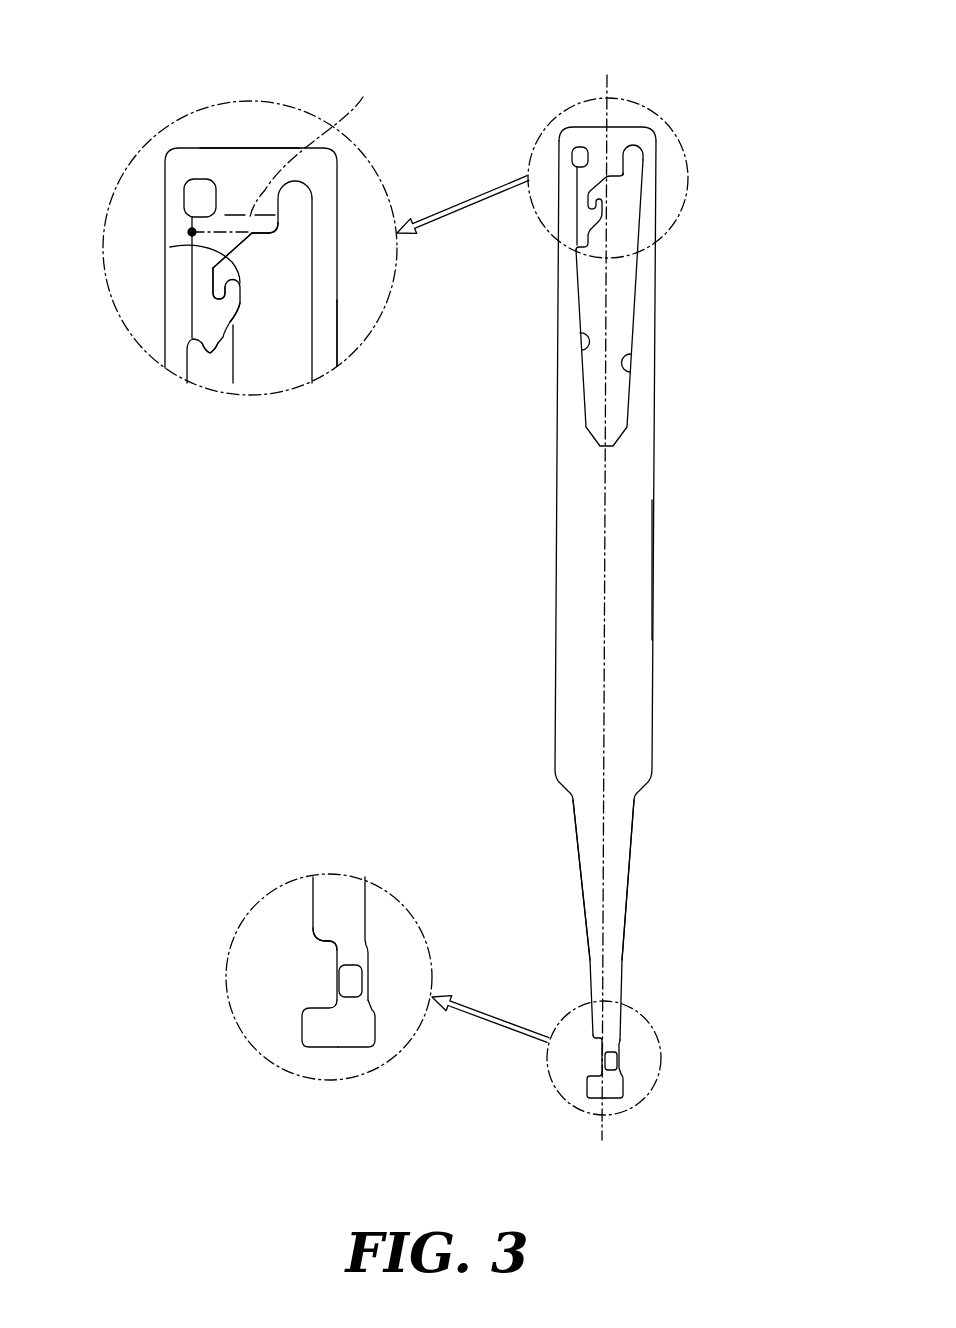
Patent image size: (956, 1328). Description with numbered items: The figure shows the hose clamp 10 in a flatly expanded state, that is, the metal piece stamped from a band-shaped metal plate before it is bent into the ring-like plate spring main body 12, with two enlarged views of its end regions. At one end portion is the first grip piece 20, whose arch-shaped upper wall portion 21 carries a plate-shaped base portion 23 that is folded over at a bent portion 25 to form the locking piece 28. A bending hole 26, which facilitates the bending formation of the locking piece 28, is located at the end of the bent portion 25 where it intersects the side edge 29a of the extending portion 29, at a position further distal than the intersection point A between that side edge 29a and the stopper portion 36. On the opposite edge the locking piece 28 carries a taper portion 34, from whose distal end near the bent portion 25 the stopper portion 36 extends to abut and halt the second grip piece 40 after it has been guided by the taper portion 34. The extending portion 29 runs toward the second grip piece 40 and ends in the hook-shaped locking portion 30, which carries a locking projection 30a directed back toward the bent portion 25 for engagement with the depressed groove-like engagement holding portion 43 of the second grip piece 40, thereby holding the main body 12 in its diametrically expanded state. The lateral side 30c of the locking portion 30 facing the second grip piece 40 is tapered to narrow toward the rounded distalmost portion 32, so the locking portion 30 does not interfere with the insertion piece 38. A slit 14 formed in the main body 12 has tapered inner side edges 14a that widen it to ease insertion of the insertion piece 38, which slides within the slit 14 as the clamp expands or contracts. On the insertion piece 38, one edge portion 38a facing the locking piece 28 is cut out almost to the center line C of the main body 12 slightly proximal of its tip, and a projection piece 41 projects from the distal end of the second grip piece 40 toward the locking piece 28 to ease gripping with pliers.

The clamp 10 is at (545, 532).
The plate spring main body 12 is at (640, 455).
The slit 14 is at (625, 312).
The inner side edges 14a is at (580, 350).
The first grip piece 20 is at (235, 136).
The upper wall portion 21 is at (257, 152).
The base portion 23 is at (231, 192).
The bent portion 25 is at (317, 145).
The bending hole 26 is at (195, 200).
The locking piece 28 is at (264, 252).
The extending portion 29 is at (213, 267).
The side edge 29a is at (190, 268).
The locking portion 30 is at (210, 257).
The locking projection 30a is at (170, 247).
The lateral side 30c is at (233, 325).
The distalmost portion 32 is at (205, 355).
The taper portion 34 is at (250, 243).
The stopper portion 36 is at (270, 240).
The insertion piece 38 is at (617, 858).
The one edge portion 38a is at (337, 965).
The second grip piece 40 is at (616, 1111).
The projection piece 41 is at (587, 1090).
The engagement holding portion 43 is at (618, 1062).
The intersection point A is at (192, 232).
The center line C is at (605, 540).